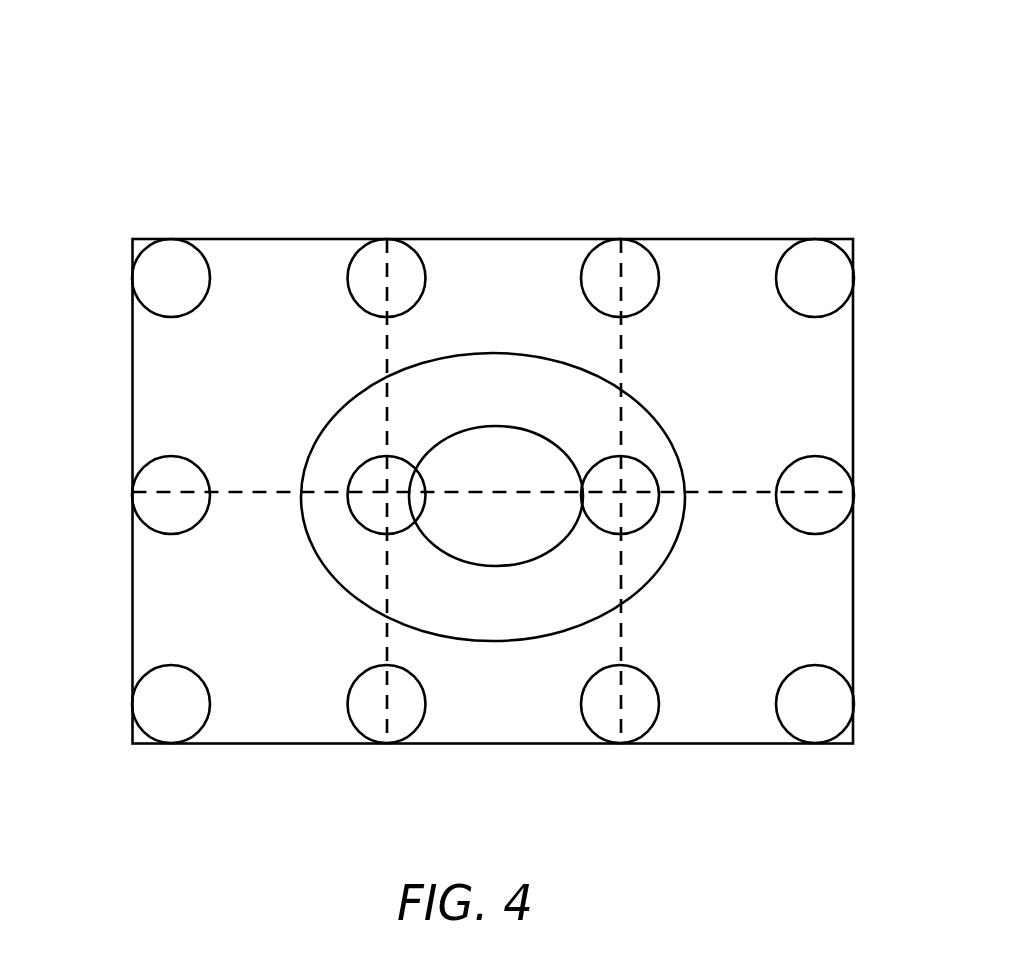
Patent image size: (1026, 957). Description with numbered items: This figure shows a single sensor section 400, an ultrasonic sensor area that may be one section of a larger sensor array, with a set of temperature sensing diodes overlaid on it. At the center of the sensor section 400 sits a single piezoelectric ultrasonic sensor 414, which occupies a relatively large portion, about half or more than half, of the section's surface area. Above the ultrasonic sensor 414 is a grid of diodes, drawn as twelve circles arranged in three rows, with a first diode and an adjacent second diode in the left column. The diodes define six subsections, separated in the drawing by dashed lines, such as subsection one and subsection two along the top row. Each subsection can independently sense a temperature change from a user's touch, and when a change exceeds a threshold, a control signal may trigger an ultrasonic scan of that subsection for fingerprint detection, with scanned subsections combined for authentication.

The sensor section 400 is at (149, 58).
The piezoelectric ultrasonic sensor 414 is at (645, 408).